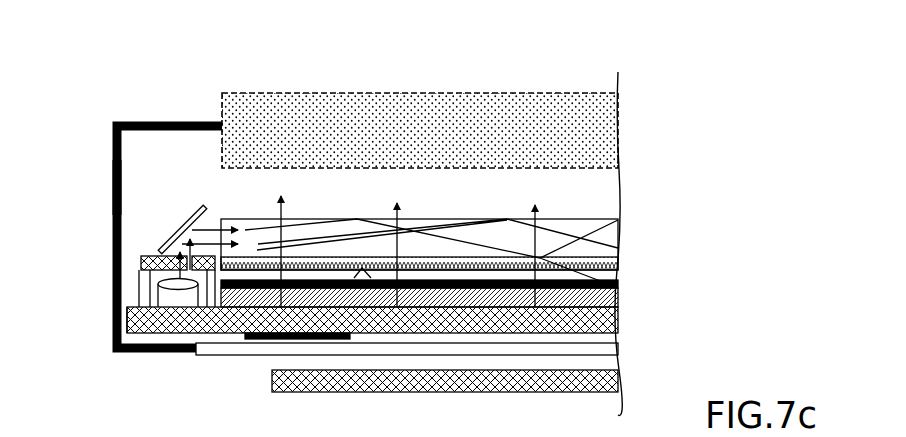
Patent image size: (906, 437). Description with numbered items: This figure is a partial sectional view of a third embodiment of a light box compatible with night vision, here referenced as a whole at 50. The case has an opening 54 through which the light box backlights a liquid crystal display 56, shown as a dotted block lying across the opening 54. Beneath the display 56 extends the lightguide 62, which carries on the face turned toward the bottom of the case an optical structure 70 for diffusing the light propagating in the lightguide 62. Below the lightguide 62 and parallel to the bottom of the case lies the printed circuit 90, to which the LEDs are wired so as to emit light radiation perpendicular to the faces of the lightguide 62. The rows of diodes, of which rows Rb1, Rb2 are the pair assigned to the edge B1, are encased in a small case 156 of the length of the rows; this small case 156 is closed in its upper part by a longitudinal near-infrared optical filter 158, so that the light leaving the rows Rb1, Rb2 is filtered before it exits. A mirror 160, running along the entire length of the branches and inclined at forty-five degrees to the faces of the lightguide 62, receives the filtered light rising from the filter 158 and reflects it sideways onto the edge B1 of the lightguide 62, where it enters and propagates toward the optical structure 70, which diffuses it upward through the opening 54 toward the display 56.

The display device 50 is at (112, 183).
The opening 54 is at (205, 116).
The liquid crystal display 56 is at (488, 122).
The lightguide 62 is at (573, 229).
The optical structure 70 is at (618, 284).
The printed circuit 90 is at (582, 326).
The small case 156 is at (134, 278).
The near-infrared optical filter 158 is at (148, 254).
The mirror 160 is at (197, 212).
The row of LEDs Rb1 is at (167, 298).
The row of LEDs Rb2 is at (80, 326).
The edge of the lightguide B1 is at (222, 223).